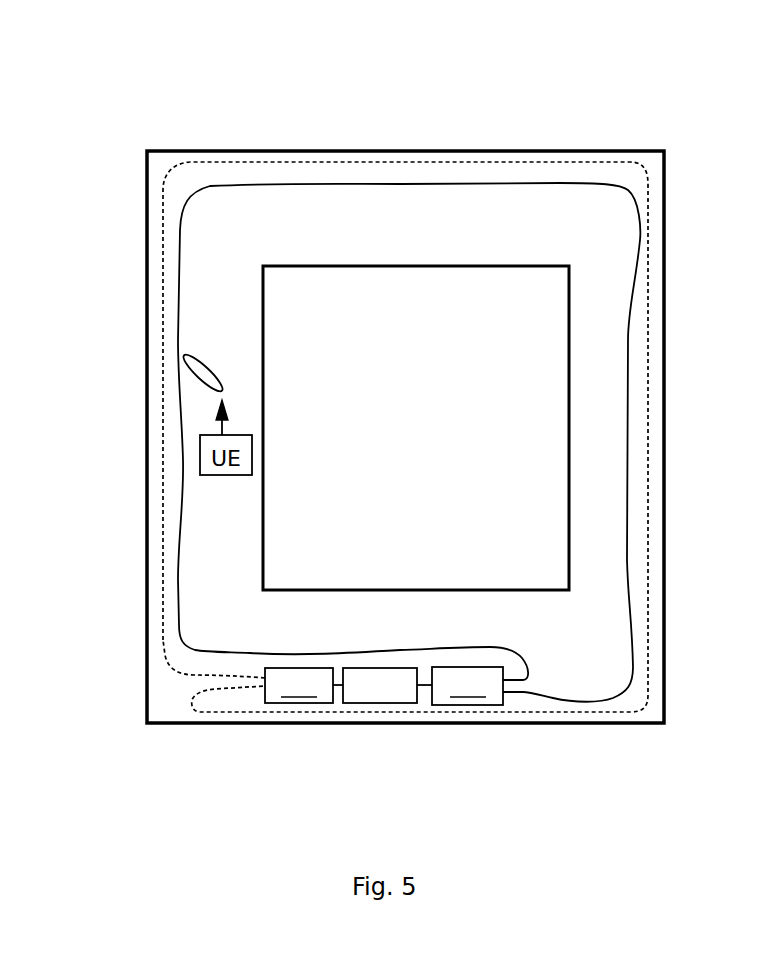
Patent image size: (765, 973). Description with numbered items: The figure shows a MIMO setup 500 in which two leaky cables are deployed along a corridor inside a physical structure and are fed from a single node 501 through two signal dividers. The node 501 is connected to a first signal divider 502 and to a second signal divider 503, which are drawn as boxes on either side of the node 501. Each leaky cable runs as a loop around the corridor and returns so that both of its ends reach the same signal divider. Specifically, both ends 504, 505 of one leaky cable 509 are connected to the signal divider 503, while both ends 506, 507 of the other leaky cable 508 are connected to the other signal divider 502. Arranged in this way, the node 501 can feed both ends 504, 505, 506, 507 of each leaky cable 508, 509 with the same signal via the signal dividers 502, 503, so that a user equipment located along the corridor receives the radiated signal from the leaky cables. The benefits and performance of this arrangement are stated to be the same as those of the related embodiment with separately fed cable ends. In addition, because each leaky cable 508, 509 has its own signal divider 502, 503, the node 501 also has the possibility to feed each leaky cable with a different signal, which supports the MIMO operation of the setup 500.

The wireless communication system 500 is at (153, 82).
The node 501 is at (367, 700).
The signal divider 502 is at (299, 685).
The signal divider 503 is at (467, 686).
The end of leaky cable 504 is at (523, 695).
The end of leaky cable 505 is at (528, 675).
The end of leaky cable 506 is at (250, 713).
The end of leaky cable 507 is at (198, 677).
The leaky cable 508 is at (158, 622).
The leaky cable 509 is at (178, 578).